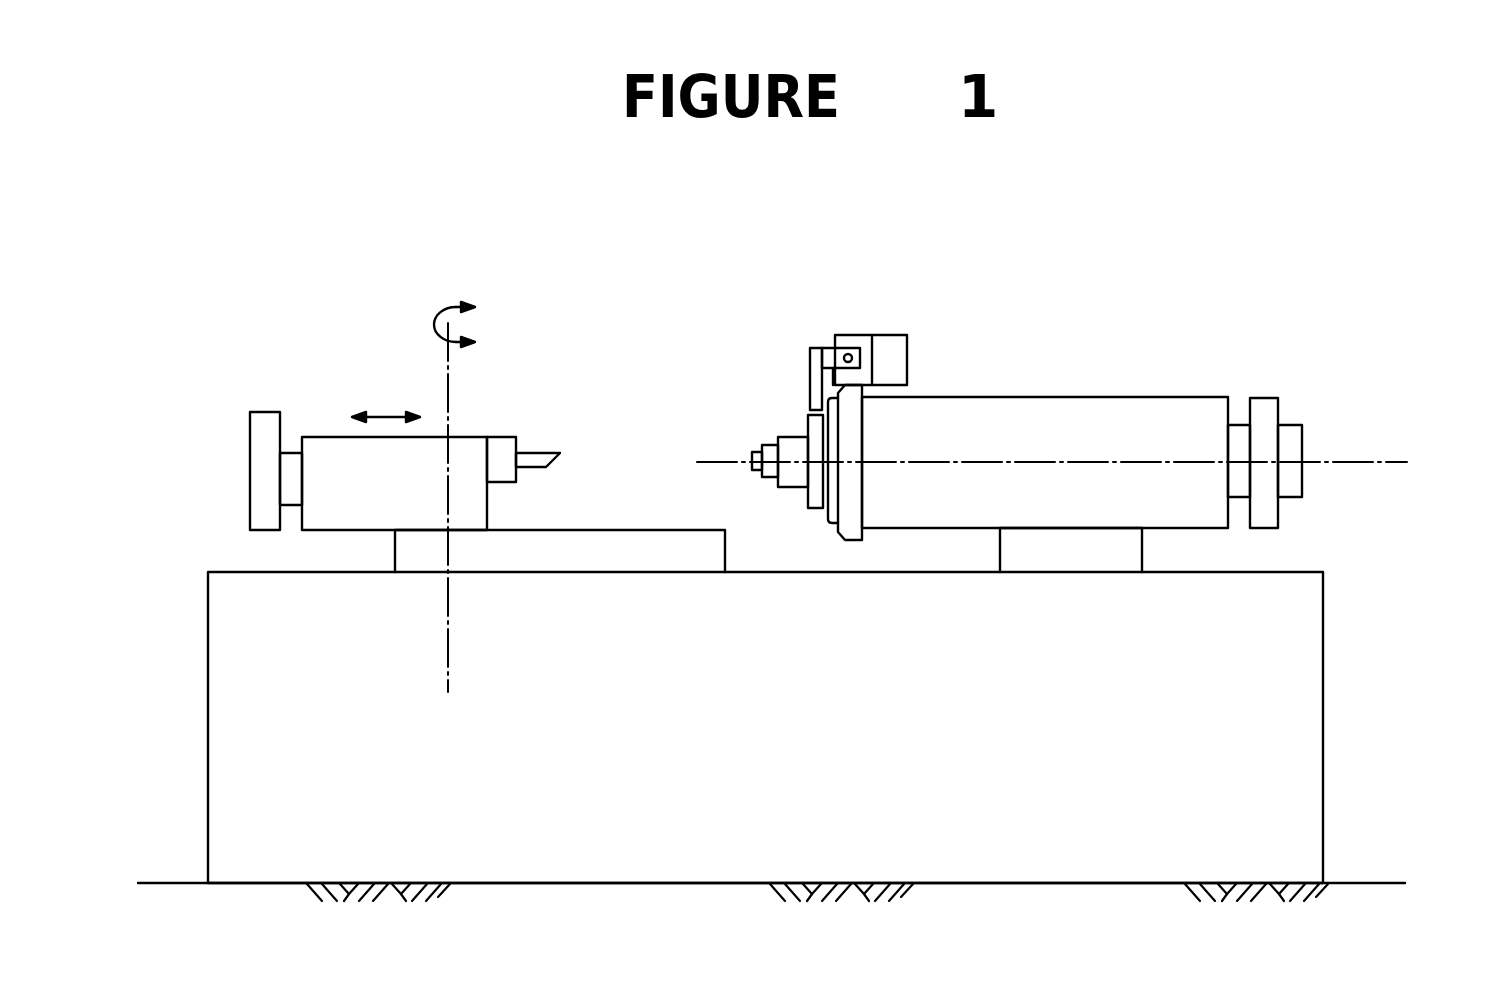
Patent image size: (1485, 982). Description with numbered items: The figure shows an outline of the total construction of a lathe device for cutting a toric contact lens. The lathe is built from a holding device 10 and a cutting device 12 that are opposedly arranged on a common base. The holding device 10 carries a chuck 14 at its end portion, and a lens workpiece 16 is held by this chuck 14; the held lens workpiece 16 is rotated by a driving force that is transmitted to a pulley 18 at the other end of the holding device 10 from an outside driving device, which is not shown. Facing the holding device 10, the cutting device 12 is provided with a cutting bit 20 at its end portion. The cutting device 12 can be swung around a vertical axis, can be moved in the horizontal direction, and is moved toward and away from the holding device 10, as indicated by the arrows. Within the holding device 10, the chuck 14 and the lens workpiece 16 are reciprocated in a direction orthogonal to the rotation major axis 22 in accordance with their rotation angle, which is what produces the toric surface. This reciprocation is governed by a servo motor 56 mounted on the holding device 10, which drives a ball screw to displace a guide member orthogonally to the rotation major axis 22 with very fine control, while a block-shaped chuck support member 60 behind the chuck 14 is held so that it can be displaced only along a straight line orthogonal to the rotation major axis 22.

The holding device 10 is at (1075, 368).
The cutting device 12 is at (320, 390).
The chuck 14 is at (770, 448).
The lens workpiece 16 is at (757, 470).
The pulley 18 is at (1263, 418).
The cutting bit 20 is at (535, 459).
The rotation major axis 22 is at (1350, 445).
The servo motor 56 is at (884, 355).
The chuck support member 60 is at (795, 472).